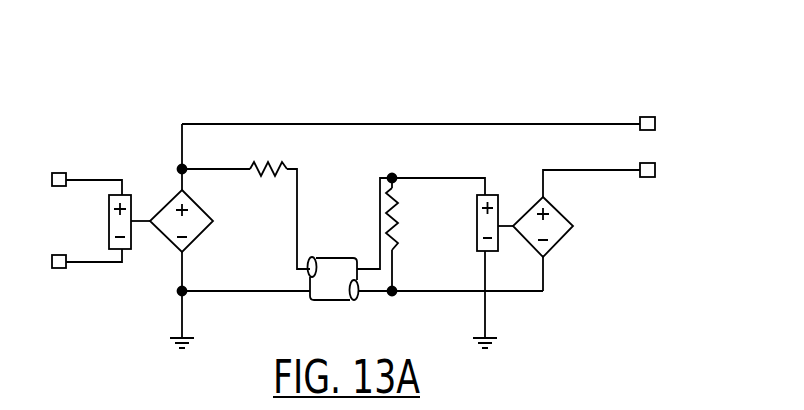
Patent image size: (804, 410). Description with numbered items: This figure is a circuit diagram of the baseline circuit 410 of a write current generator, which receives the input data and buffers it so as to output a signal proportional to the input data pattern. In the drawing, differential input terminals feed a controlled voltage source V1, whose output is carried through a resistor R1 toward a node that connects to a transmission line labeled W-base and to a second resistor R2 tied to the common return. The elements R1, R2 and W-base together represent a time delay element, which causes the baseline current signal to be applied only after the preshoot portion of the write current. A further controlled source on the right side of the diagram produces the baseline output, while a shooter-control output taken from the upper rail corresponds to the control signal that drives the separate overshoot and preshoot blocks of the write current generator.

The baseline circuit 410 is at (180, 85).
The voltage-controlled voltage source V1 (1V/V, 50 ohm) V1 is at (218, 213).
The resistor R1 is at (263, 154).
The resistor R2 is at (428, 218).